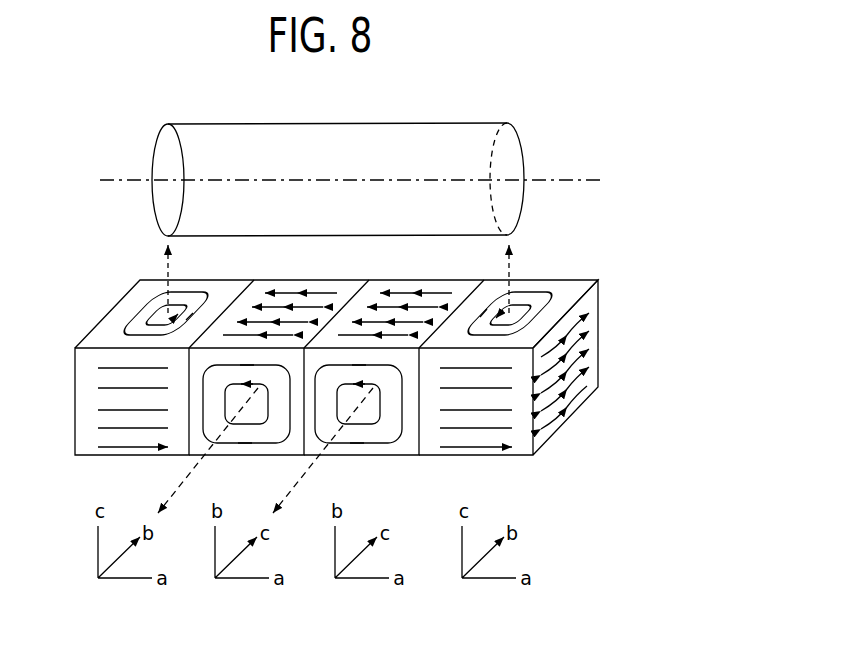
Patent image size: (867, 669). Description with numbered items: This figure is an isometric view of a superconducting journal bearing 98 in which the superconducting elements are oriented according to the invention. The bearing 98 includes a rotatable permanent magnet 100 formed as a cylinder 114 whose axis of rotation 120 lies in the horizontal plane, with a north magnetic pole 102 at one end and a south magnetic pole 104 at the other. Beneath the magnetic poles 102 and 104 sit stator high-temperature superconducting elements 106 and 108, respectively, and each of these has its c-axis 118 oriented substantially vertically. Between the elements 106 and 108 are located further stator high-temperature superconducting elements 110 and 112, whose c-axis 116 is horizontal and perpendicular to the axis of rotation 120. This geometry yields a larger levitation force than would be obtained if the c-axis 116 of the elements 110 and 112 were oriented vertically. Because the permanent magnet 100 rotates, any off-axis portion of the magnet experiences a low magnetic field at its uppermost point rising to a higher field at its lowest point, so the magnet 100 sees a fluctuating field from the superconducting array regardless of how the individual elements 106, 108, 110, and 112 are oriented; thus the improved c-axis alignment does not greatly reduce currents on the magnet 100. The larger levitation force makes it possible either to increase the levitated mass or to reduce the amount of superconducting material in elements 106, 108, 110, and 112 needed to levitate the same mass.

The journal bearing 98 is at (600, 244).
The rotatable permanent magnet 100 is at (371, 152).
The north magnetic pole 102 is at (157, 176).
The south magnetic pole 104 is at (511, 172).
The stator high-temperature superconducting element 106 is at (97, 382).
The stator high-temperature superconducting element 108 is at (591, 349).
The stator high-temperature superconducting element 110 is at (267, 449).
The stator high-temperature superconducting element 112 is at (404, 449).
The cylinder 114 is at (204, 121).
The c-axis 116 is at (186, 478).
The c-axis 118 is at (171, 266).
The axis of rotation 120 is at (113, 181).